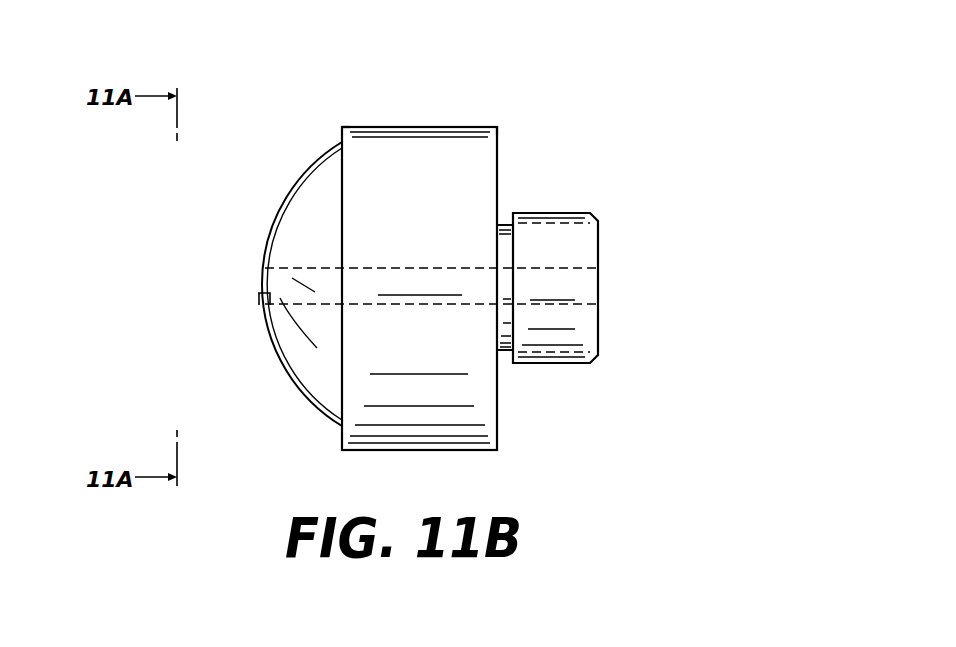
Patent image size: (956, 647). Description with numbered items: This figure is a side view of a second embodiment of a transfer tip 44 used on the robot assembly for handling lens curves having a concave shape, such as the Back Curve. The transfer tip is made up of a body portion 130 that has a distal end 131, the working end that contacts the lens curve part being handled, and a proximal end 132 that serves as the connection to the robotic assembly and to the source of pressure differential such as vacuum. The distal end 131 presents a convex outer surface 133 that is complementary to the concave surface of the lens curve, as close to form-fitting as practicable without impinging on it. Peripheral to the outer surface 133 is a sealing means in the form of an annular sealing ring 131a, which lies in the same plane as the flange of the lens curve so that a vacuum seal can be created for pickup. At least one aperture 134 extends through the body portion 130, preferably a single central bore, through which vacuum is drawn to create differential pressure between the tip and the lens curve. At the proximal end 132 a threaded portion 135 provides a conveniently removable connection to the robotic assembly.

The implant assembly 44 is at (610, 424).
The body portion 130 is at (428, 143).
The distal end 131 is at (340, 140).
The annular sealing ring 131a is at (337, 118).
The proximal end 132 is at (500, 138).
The outer surface 133 is at (276, 212).
The aperture 134 is at (252, 300).
The threaded portion 135 is at (573, 213).